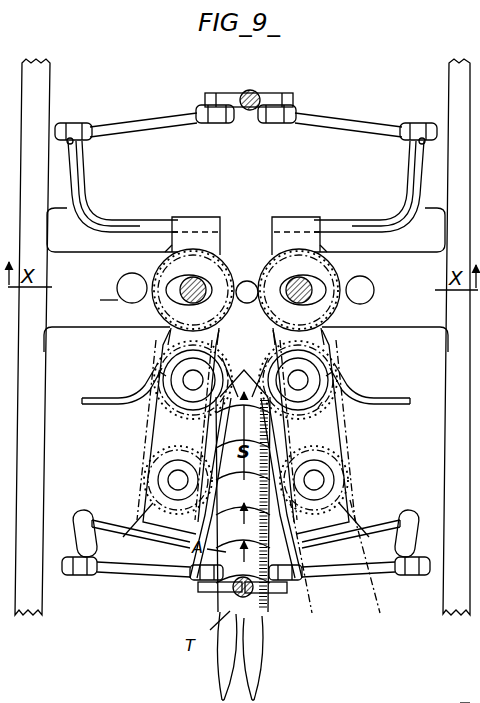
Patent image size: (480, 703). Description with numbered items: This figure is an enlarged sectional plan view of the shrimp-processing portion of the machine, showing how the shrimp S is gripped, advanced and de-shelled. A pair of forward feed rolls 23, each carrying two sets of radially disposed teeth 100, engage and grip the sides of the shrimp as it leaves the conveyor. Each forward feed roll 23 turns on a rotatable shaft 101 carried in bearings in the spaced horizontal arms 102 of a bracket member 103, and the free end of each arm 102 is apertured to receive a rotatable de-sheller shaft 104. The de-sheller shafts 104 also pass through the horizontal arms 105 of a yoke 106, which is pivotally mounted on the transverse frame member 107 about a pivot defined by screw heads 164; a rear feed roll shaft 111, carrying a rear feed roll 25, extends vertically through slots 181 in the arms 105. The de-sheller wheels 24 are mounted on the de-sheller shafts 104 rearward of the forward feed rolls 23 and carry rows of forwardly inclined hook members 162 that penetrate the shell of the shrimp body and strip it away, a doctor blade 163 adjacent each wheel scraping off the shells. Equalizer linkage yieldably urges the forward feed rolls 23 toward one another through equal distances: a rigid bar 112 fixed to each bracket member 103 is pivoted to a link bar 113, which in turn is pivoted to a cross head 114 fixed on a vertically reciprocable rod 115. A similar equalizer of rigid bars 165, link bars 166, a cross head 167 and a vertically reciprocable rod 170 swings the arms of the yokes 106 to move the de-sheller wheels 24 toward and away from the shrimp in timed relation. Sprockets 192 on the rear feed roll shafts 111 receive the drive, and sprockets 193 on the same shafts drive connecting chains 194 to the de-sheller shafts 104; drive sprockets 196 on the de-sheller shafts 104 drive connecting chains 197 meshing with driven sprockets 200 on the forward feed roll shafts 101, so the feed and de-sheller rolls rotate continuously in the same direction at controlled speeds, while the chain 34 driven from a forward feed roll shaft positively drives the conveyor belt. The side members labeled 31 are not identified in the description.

The frame side bar 31 is at (43, 81).
The link bars 166 is at (137, 122).
The cross head 167 is at (286, 96).
The vertically reciprocable rod 170 is at (251, 91).
The rigid bars 165 is at (85, 186).
The horizontal arms 105 is at (178, 232).
The yoke 106 is at (196, 216).
The rear feed rolls 25 is at (171, 241).
The sprockets 193 is at (208, 248).
The slot 181 is at (166, 303).
The rear feed roll shaft 111 is at (290, 280).
The screw heads 164 is at (124, 276).
The transverse frame member 107 is at (91, 292).
The connecting chains 194 is at (162, 341).
The de-sheller shaft 104 is at (297, 378).
The hook members 162 is at (195, 381).
The de-sheller wheels 24 is at (161, 373).
The doctor blade 163 is at (101, 398).
The horizontal arms 102 is at (163, 431).
The connecting chain 197 is at (157, 413).
The drive sprockets 196 is at (323, 403).
The forward feed rolls 23 is at (146, 466).
The teeth 100 is at (150, 498).
The rotatable shaft 101 is at (170, 480).
The rigid bar 112 is at (86, 512).
The driven sprocket 200 is at (242, 529).
The bracket member 103 is at (181, 544).
The link bar 113 is at (145, 576).
The cross head 114 is at (208, 596).
The vertically reciprocable rod 115 is at (262, 604).
The chain 34 is at (378, 597).
The sprockets 192 is at (458, 700).